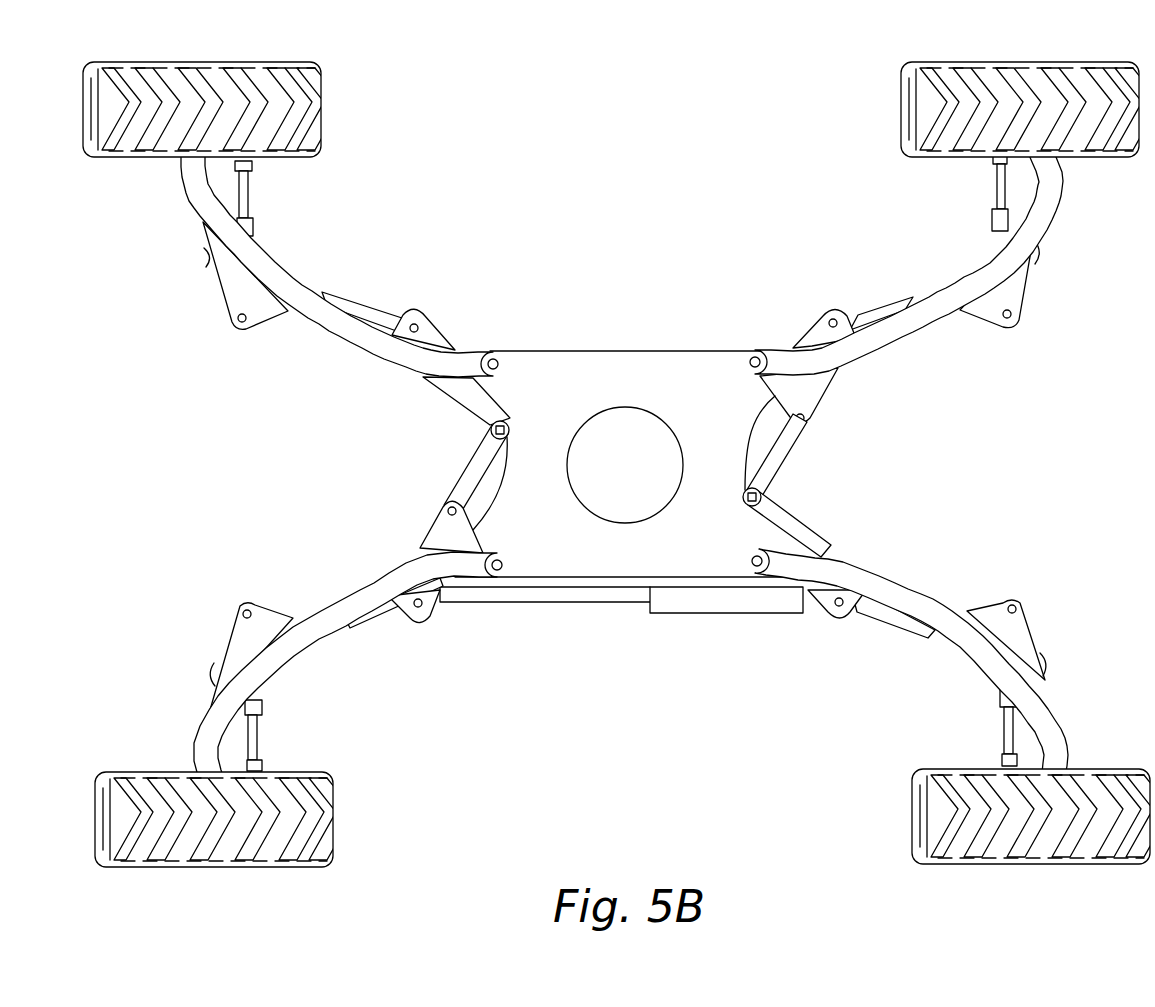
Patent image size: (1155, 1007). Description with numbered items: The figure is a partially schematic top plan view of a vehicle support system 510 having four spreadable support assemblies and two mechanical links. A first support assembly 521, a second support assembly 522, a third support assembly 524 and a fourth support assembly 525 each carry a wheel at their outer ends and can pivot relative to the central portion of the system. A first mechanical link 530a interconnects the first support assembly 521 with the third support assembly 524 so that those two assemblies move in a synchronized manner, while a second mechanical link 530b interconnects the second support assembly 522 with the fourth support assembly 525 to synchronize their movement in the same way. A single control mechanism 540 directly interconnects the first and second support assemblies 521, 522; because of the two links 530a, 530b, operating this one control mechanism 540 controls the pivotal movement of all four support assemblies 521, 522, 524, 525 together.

The main frame 510 is at (590, 353).
The first support assembly 521 is at (307, 648).
The second support assembly 522 is at (983, 657).
The third support assembly 524 is at (283, 270).
The fourth support assembly 525 is at (905, 337).
The first mechanical link 530a is at (463, 467).
The second mechanical link 530b is at (789, 467).
The control mechanism 540 is at (707, 613).